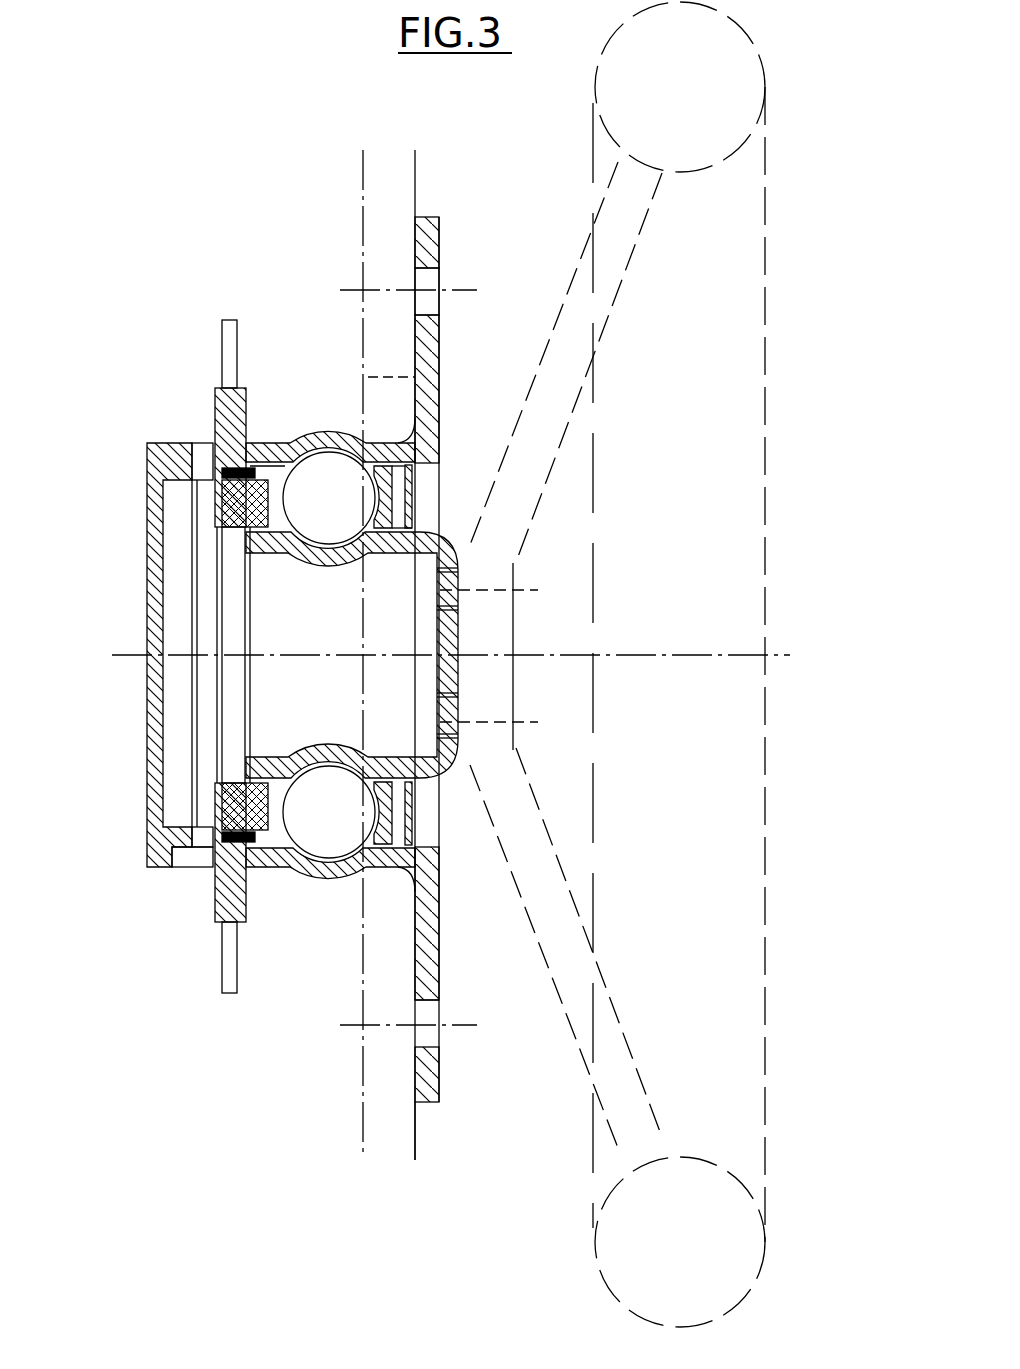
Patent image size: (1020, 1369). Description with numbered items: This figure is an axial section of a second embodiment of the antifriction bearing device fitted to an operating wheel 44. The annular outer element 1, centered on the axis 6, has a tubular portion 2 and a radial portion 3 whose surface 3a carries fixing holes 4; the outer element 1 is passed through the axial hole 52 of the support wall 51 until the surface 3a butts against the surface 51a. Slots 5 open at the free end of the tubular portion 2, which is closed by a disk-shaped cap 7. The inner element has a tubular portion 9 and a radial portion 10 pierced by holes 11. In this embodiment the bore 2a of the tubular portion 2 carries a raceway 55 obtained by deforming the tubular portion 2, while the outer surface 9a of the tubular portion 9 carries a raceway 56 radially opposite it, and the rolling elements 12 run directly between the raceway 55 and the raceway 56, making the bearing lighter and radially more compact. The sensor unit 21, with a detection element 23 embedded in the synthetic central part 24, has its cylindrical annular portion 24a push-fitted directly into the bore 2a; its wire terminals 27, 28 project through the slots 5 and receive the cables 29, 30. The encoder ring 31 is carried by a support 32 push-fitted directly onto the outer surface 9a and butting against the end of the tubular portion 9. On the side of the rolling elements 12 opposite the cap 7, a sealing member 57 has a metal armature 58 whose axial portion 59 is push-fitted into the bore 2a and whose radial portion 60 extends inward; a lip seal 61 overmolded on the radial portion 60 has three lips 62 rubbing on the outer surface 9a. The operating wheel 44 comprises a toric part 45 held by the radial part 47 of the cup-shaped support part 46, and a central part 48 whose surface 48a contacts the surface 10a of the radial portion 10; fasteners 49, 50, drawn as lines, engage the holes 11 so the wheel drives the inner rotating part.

The outer element 1 is at (372, 445).
The tubular portion 2 is at (262, 450).
The bore 2a is at (288, 448).
The radial portion 3 is at (426, 240).
The surface 3a is at (440, 338).
The fixing holes 4 is at (428, 287).
The slots 5 is at (197, 455).
The axis 6 is at (122, 652).
The cap 7 is at (160, 468).
The tubular portion 9 is at (397, 543).
The outer surface 9a is at (420, 557).
The radial portion 10 is at (446, 619).
The surface 10a is at (457, 690).
The holes 11 is at (440, 715).
The rolling elements 12 is at (315, 517).
The sensor unit 21 is at (214, 892).
The detection element 23 is at (218, 873).
The central part 24 is at (235, 888).
The cylindrical annular portion 24a is at (283, 840).
The wire terminal 27 is at (222, 398).
The wire terminal 28 is at (235, 923).
The cable 29 is at (228, 342).
The cable 30 is at (228, 973).
The encoder ring 31 is at (223, 802).
The support 32 is at (252, 763).
The operating wheel 44 is at (609, 127).
The toric part 45 is at (615, 68).
The support part 46 is at (622, 240).
The radial part 47 is at (560, 400).
The central part 48 is at (493, 615).
The surface 48a is at (466, 648).
The fastener 49 is at (528, 590).
The fastener 50 is at (530, 722).
The support wall 51 is at (385, 1085).
The surface 51a is at (415, 1147).
The axial hole 52 is at (390, 903).
The raceway 55 is at (340, 437).
The raceway 56 is at (312, 777).
The sealing member 57 is at (420, 474).
The metal armature 58 is at (428, 820).
The axial portion 59 is at (413, 416).
The radial portion 60 is at (410, 492).
The lip seal 61 is at (403, 527).
The lips 62 is at (422, 748).